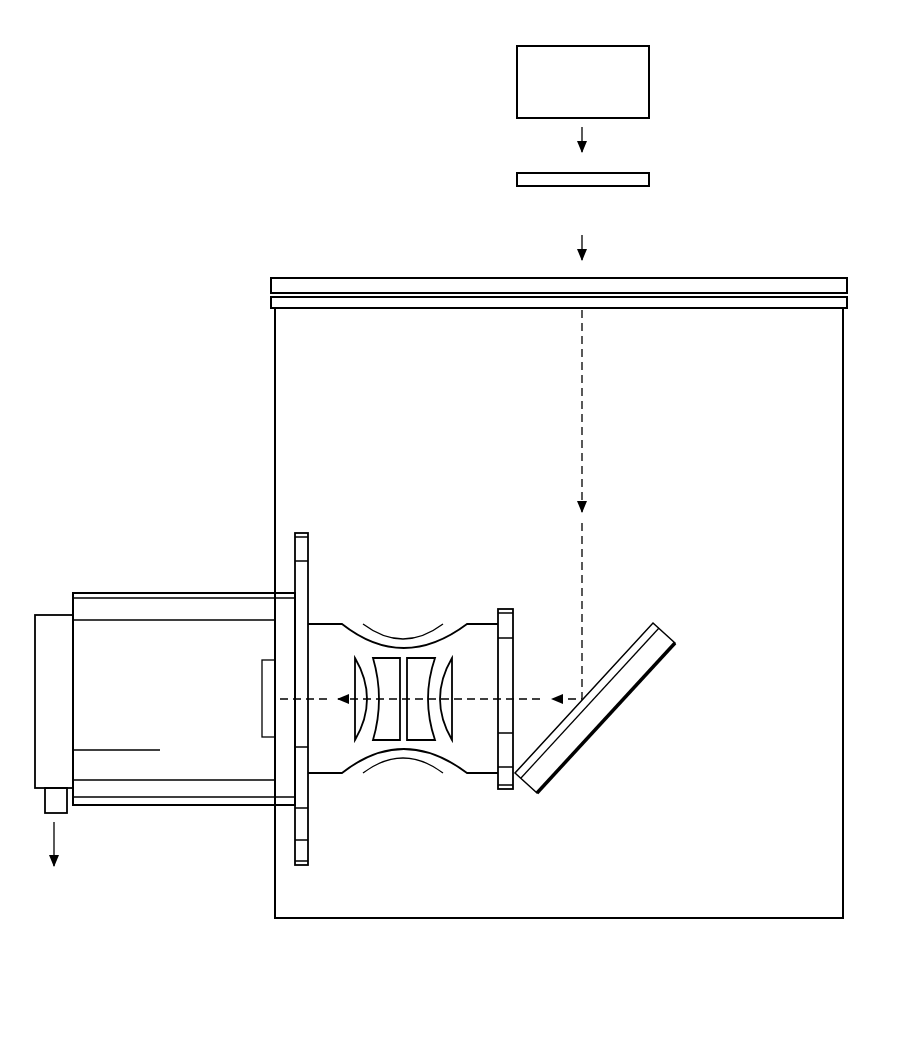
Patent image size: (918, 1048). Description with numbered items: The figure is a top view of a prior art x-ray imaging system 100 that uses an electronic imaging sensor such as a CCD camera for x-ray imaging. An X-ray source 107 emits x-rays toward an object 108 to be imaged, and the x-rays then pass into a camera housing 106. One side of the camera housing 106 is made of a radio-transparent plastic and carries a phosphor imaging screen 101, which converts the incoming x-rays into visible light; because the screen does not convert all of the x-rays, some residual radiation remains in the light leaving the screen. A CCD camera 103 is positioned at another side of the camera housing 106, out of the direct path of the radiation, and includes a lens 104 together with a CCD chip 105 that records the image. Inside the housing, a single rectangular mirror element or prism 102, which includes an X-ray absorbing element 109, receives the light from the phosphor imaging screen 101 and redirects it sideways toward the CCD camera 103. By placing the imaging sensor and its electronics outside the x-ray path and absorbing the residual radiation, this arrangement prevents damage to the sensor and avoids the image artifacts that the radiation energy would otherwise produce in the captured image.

The imaging system 100 is at (768, 145).
The phosphor imaging screen 101 is at (745, 310).
The mirror element or prism 102 is at (637, 643).
The CCD camera 103 is at (143, 593).
The lens 104 is at (330, 624).
The CCD chip 105 is at (262, 716).
The camera housing 106 is at (274, 365).
The X-ray source 107 is at (517, 82).
The object 108 is at (517, 180).
The X-ray absorbing element 109 is at (603, 716).